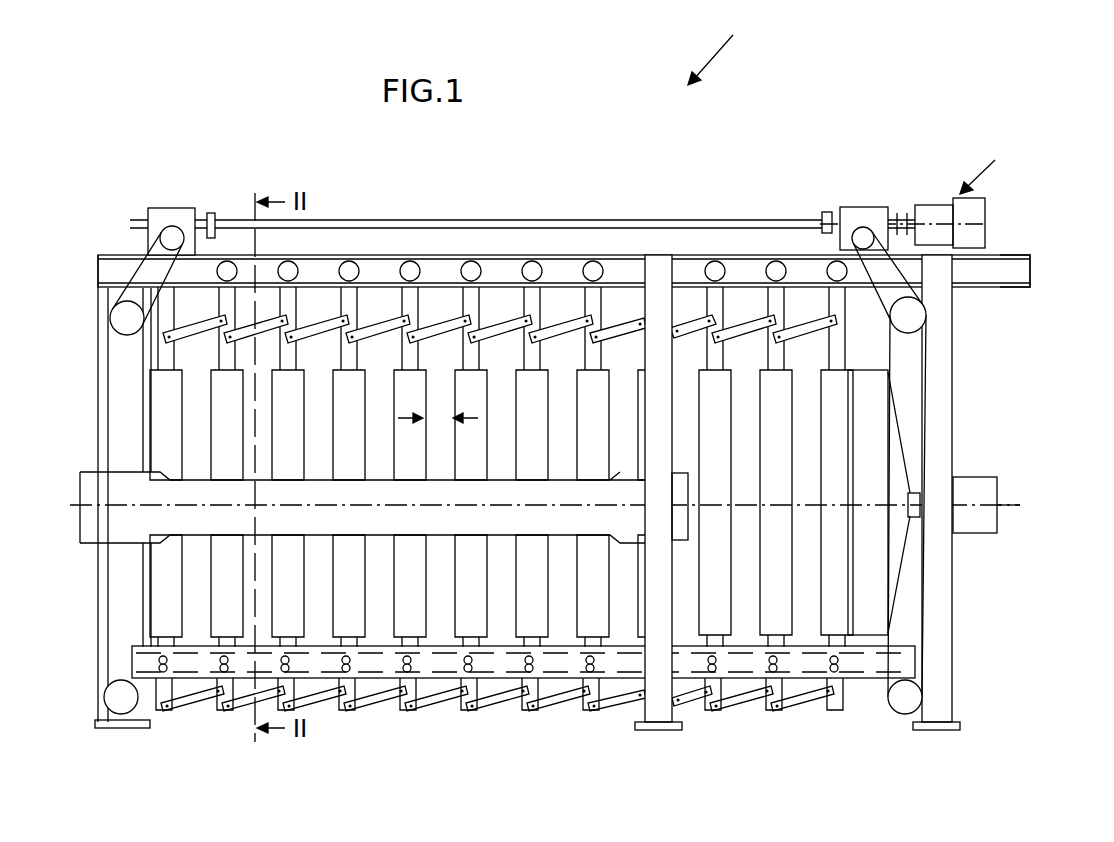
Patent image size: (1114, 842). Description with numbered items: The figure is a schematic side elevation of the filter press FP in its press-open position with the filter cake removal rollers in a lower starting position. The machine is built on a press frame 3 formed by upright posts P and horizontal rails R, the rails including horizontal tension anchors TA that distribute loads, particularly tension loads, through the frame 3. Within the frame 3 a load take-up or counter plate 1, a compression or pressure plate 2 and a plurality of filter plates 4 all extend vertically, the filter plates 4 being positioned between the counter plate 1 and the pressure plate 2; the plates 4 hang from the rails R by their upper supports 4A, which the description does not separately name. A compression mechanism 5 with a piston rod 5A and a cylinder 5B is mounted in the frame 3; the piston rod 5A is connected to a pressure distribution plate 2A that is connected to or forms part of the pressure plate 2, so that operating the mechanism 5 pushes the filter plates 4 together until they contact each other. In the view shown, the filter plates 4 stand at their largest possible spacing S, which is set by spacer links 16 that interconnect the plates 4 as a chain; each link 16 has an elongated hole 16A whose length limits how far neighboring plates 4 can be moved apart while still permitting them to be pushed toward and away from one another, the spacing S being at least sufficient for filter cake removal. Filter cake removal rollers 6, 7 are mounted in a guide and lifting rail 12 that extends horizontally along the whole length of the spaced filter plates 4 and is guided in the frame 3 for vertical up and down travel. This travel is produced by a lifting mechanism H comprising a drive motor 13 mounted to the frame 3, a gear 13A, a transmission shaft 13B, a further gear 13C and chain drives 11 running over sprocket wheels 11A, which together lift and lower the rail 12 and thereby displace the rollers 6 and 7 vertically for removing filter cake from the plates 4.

The counter plate 1 is at (118, 410).
The compression plate 2 is at (868, 378).
The pressure distribution plate 2A is at (898, 524).
The press frame 3 is at (322, 252).
The filter plates 4 is at (845, 596).
The roller pivot pins 4A is at (412, 264).
The compression mechanism 5 is at (1036, 493).
The piston rod 5A is at (915, 497).
The cylinder 5B is at (985, 520).
The filter cake removal roller 6 is at (468, 660).
The filter cake removal roller 7 is at (493, 698).
The chain drives 11 is at (128, 272).
The sprocket wheels 11A is at (170, 226).
The lifting rail 12 is at (895, 665).
The drive motor 13 is at (938, 215).
The gear 13A is at (857, 210).
The transmission shaft 13B is at (632, 220).
The further gear 13C is at (190, 212).
The spacer links 16 is at (590, 322).
The elongated hole 16A is at (505, 320).
The upright posts P is at (110, 298).
The horizontal rails R is at (1025, 269).
The spacing S is at (438, 422).
The lifting mechanism H is at (986, 162).
The filter press FP is at (727, 45).
The horizontal tension anchors TA is at (333, 518).